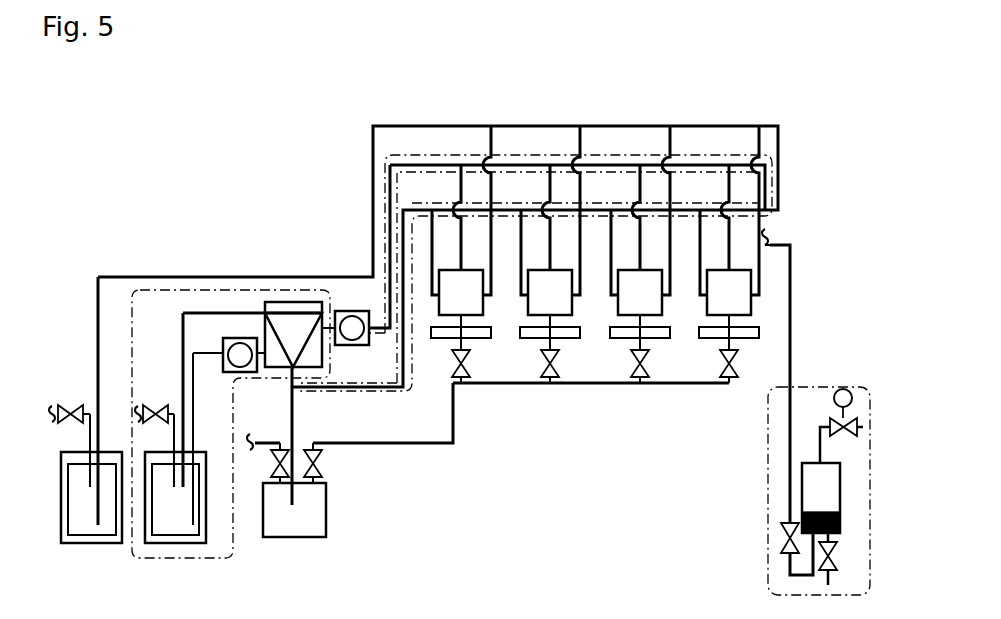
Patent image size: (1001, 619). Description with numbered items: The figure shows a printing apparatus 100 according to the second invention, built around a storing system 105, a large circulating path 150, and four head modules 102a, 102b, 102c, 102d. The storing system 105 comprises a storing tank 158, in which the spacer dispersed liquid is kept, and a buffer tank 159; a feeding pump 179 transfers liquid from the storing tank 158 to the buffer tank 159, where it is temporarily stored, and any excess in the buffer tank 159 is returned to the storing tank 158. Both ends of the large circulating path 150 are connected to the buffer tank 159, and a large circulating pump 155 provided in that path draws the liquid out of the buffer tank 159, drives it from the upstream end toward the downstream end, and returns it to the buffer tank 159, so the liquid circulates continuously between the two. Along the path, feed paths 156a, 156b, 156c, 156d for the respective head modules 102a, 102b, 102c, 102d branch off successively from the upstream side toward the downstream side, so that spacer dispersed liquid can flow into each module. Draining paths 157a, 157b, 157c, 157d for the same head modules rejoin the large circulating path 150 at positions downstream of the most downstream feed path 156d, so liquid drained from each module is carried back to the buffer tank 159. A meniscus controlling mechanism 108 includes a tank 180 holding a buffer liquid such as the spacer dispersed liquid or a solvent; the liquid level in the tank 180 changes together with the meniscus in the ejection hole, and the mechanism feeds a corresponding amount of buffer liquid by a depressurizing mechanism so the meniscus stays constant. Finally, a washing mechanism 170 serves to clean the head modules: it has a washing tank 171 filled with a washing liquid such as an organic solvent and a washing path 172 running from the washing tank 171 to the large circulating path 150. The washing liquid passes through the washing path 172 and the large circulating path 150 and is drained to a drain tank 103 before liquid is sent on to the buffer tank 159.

The printing apparatus 100 is at (116, 91).
The head module 102a is at (477, 316).
The head module 102b is at (555, 316).
The head module 102c is at (636, 316).
The head module 102d is at (717, 316).
The drain tank 103 is at (288, 537).
The storing system 105 is at (330, 290).
The meniscus controlling mechanism 108 is at (858, 386).
The large circulating path 150 is at (780, 188).
The large circulating pump 155 is at (348, 311).
The feed path 156a is at (461, 192).
The feed path 156b is at (550, 186).
The feed path 156c is at (640, 188).
The feed path 156d is at (729, 190).
The draining path 157a is at (430, 232).
The draining path 157b is at (520, 227).
The draining path 157c is at (608, 227).
The draining path 157d is at (698, 230).
The storing tank 158 is at (173, 543).
The buffer tank 159 is at (293, 303).
The washing mechanism 170 is at (50, 219).
The washing tank 171 is at (110, 453).
The washing path 172 is at (98, 277).
The feeding pump 179 is at (243, 338).
The tank 180 is at (812, 468).